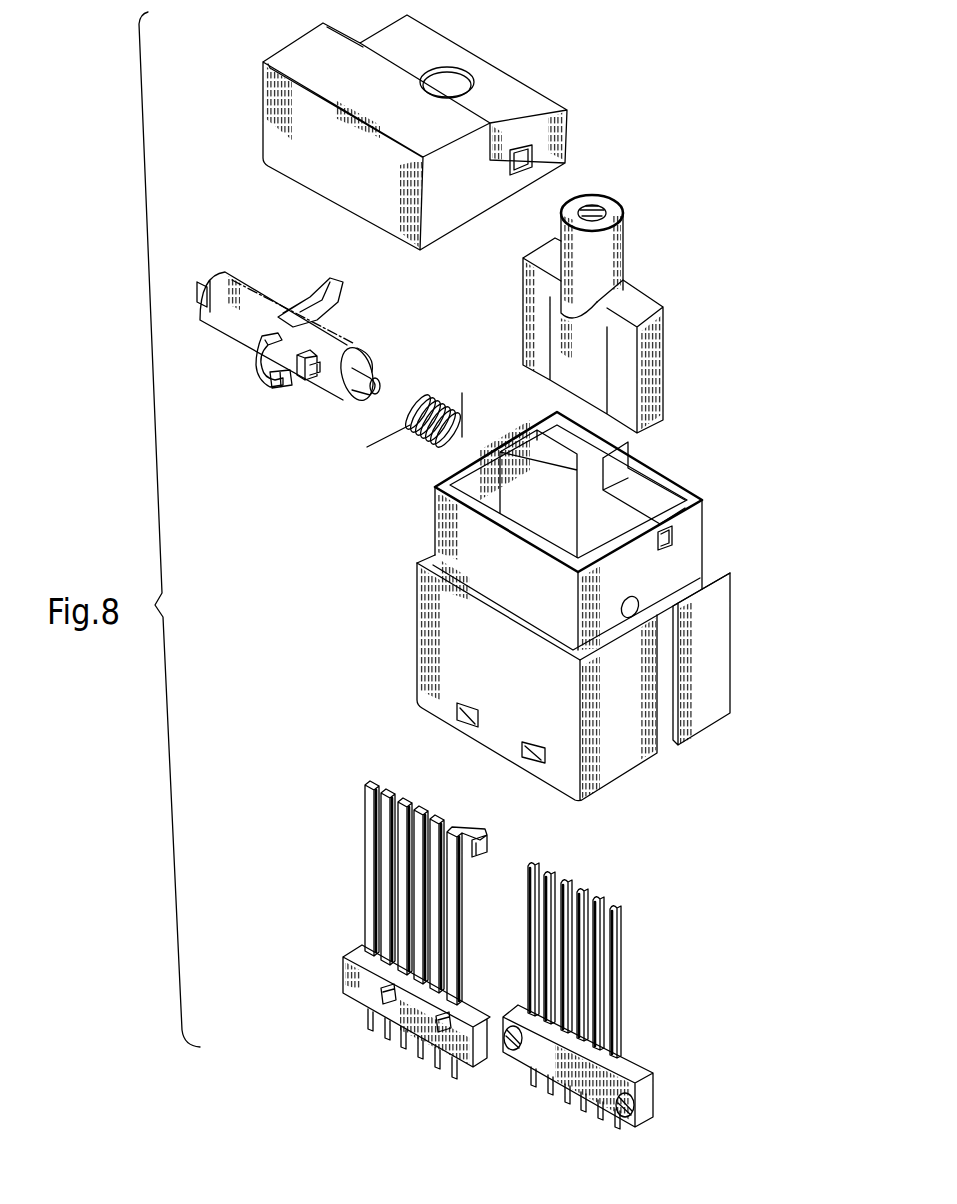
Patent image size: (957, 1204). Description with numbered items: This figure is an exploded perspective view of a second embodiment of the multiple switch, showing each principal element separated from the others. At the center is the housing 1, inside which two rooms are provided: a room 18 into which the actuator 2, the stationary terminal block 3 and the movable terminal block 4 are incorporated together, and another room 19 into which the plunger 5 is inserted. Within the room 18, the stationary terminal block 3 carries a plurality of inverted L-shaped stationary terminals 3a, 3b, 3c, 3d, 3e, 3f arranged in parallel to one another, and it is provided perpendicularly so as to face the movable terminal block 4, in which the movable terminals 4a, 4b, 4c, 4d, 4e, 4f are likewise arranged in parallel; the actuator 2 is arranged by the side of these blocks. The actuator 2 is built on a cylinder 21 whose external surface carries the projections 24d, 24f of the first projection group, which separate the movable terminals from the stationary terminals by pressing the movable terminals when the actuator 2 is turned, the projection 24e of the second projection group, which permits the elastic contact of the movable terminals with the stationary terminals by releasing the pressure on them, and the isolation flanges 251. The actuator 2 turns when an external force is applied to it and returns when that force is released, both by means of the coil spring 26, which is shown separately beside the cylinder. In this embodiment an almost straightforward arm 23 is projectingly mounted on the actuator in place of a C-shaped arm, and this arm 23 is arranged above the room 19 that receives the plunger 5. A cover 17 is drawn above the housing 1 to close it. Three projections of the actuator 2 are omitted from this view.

The housing 1 is at (600, 591).
The actuator 2 is at (282, 345).
The stationary terminal block 3 is at (395, 901).
The stationary terminal 3a is at (372, 786).
The stationary terminal 3b is at (389, 795).
The stationary terminal 3c is at (405, 803).
The stationary terminal 3d is at (421, 811).
The stationary terminal 3e is at (437, 820).
The stationary terminal 3f is at (473, 828).
The movable terminal block 4 is at (609, 976).
The movable terminal 4a is at (533, 863).
The movable terminal 4b is at (550, 873).
The movable terminal 4c is at (566, 882).
The movable terminal 4d is at (582, 891).
The movable terminal 4e is at (598, 900).
The movable terminal 4f is at (614, 909).
The plunger 5 is at (630, 297).
The cover 17 is at (283, 46).
The room 18 is at (537, 495).
The room 19 is at (650, 492).
The cylinder 21 is at (240, 288).
The arm 23 is at (343, 302).
The projection 24d is at (263, 345).
The projection 24e is at (283, 383).
The projection 24f is at (307, 380).
The coil spring 26 is at (427, 400).
The isolation flange 251 is at (263, 370).